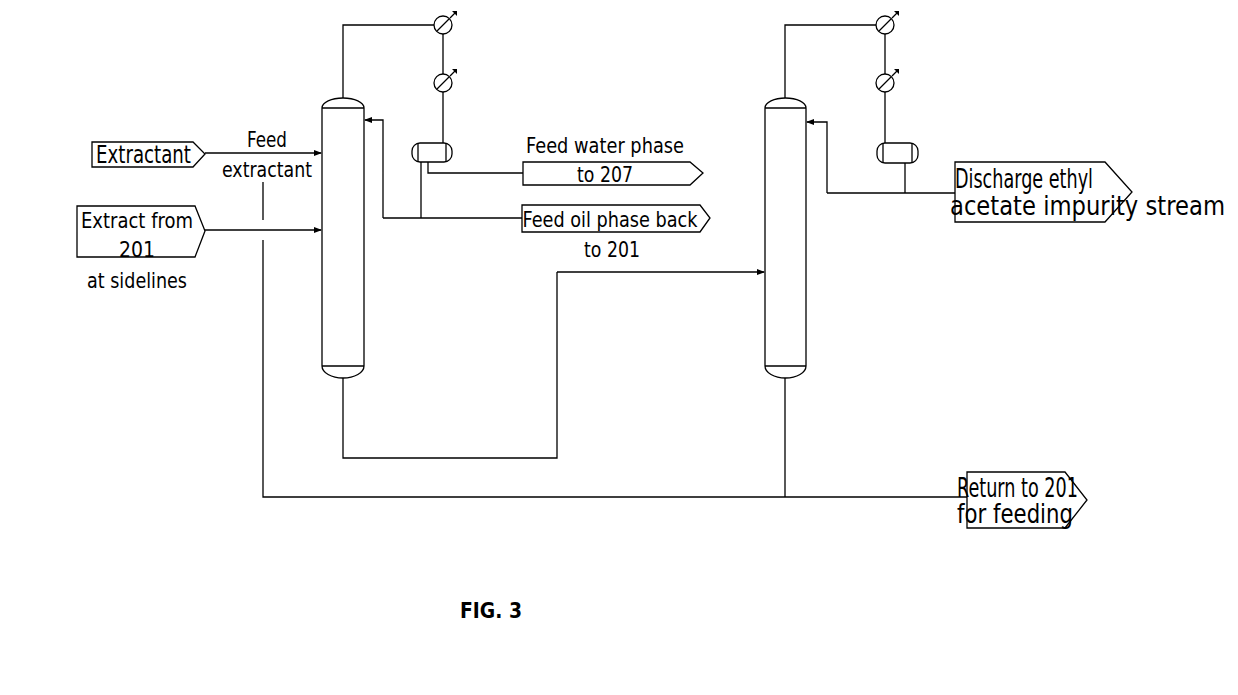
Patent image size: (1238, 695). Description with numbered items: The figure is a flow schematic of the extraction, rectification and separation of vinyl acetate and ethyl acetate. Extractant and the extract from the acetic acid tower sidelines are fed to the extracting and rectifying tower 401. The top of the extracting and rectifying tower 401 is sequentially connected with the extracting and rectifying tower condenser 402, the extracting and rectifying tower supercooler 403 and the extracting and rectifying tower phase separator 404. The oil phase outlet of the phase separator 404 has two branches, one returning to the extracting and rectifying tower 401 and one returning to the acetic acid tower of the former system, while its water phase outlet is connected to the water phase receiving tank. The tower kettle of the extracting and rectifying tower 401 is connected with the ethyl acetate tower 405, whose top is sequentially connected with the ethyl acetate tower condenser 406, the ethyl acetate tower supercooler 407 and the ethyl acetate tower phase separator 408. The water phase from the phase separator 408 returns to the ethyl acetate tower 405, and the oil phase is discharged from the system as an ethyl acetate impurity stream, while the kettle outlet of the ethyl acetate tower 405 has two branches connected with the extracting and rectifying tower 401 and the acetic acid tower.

The extracting and rectifying tower 401 is at (343, 238).
The extracting and rectifying tower condenser 402 is at (470, 25).
The extracting and rectifying tower supercooler 403 is at (470, 85).
The extracting and rectifying tower phase separator 404 is at (458, 150).
The ethyl acetate tower 405 is at (785, 238).
The ethyl acetate tower condenser 406 is at (916, 23).
The ethyl acetate tower supercooler 407 is at (920, 82).
The ethyl acetate tower phase separator 408 is at (920, 148).